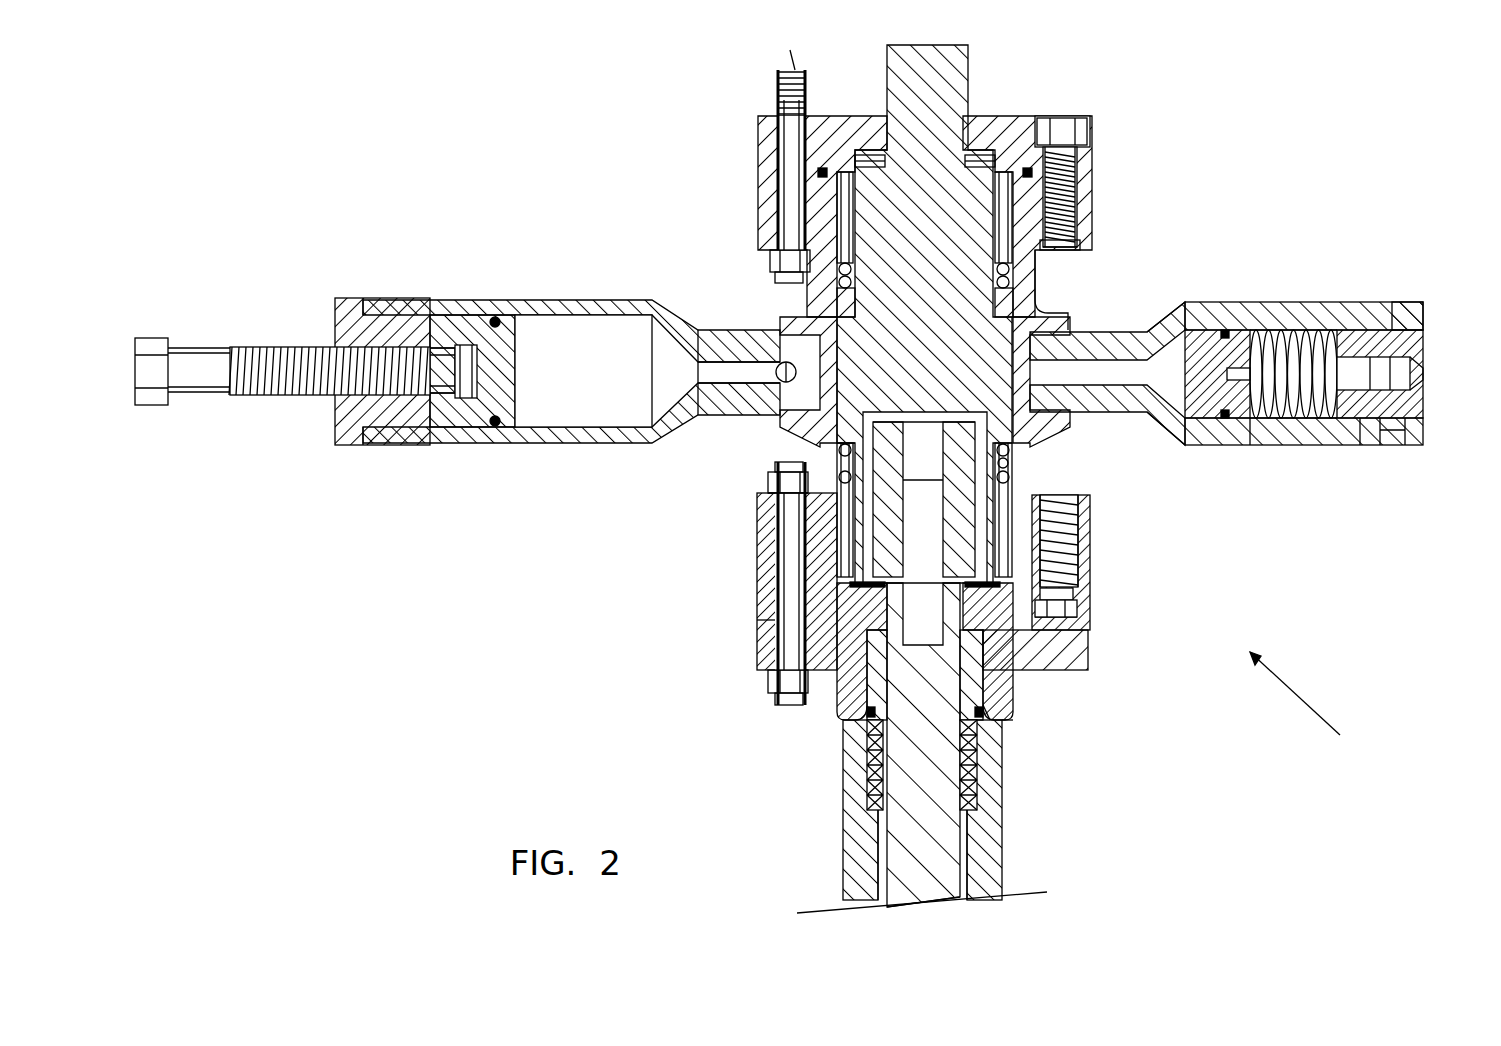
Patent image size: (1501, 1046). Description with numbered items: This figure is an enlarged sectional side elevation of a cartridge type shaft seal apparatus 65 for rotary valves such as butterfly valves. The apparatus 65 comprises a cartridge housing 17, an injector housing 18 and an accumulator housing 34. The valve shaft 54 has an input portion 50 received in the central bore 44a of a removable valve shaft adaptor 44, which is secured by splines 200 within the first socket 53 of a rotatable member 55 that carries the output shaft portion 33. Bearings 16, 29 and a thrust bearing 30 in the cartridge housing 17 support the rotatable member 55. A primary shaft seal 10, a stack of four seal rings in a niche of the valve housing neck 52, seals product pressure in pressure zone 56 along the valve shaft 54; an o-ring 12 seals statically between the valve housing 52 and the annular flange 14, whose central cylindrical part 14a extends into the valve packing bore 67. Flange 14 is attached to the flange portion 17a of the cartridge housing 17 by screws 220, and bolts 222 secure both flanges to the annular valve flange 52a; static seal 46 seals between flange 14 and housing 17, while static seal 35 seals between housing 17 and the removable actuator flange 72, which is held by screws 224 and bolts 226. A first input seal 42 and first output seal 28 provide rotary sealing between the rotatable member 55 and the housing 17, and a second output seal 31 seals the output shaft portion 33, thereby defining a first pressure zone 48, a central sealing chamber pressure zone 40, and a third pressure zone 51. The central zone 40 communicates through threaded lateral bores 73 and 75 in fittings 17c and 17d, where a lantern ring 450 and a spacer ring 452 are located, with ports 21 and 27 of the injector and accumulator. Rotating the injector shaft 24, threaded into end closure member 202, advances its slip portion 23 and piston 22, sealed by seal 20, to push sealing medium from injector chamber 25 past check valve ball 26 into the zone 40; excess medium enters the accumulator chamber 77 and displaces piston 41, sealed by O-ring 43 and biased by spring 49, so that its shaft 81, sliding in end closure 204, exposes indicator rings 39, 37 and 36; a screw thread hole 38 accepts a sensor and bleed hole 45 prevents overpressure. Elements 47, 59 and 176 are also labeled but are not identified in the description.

The primary shaft seal 10 is at (855, 785).
The o-ring 12 is at (868, 710).
The annular flange 14 is at (790, 640).
The central cylindrical part 14a is at (1000, 668).
The bearing 16 is at (790, 573).
The cartridge housing 17 is at (805, 458).
The flange portion 17a is at (768, 512).
The laterally projecting fitting 17c is at (790, 312).
The laterally projecting fitting 17d is at (1100, 330).
The injector housing 18 is at (568, 442).
The seal 20 is at (495, 427).
The port 21 is at (720, 372).
The piston 22 is at (437, 420).
The inner slip portion 23 is at (466, 355).
The injector shaft 24 is at (335, 350).
The injector chamber 25 is at (595, 330).
The check valve ball 26 is at (740, 330).
The port 27 is at (1087, 368).
The first output seal 28 is at (838, 262).
The bearing 29 is at (840, 240).
The thrust bearing 30 is at (790, 165).
The second output seal 31 is at (883, 135).
The output shaft portion 33 is at (942, 80).
The accumulator housing 34 is at (1345, 302).
The static seal 35 is at (1072, 125).
The ring 36 is at (1418, 368).
The ring 37 is at (1398, 380).
The screw thread hole 38 is at (1412, 438).
The ring 39 is at (1380, 445).
The central sealing chamber pressure zone 40 is at (1040, 297).
The piston 41 is at (1212, 328).
The first input seal 42 is at (1014, 478).
The O-ring 43 is at (1226, 420).
The valve shaft adaptor 44 is at (1075, 533).
The central bore 44a is at (918, 414).
The pressure bleed hole 45 is at (1262, 445).
The static seal 46 is at (770, 590).
The plug body 47 is at (1292, 445).
The first pressure zone 48 is at (1060, 640).
The spring 49 is at (1275, 330).
The input portion 50 is at (975, 720).
The third pressure zone 51 is at (1078, 150).
The valve housing neck 52 is at (990, 772).
The annular valve flange 52a is at (1085, 670).
The first socket 53 is at (805, 530).
The valve shaft 54 is at (930, 830).
The rotatable member 55 is at (1085, 208).
The pressure zone 56 is at (978, 880).
The block face 59 is at (795, 612).
The shaft seal apparatus 65 is at (1310, 705).
The valve packing bore 67 is at (862, 672).
The actuator flange 72 is at (998, 128).
The threaded lateral bore 73 is at (800, 430).
The threaded lateral bore 75 is at (1020, 430).
The accumulator chamber 77 is at (1180, 325).
The shaft 81 is at (1330, 430).
The threaded bore 176 is at (1083, 192).
The splines 200 is at (1080, 575).
The outer end closure member 202 is at (375, 310).
The end closure 204 is at (1405, 302).
The screws 220 is at (1078, 550).
The bolts 222 is at (780, 640).
The screws 224 is at (1080, 172).
The bolts 226 is at (777, 88).
The lantern ring 450 is at (835, 300).
The spacer ring 452 is at (1062, 262).